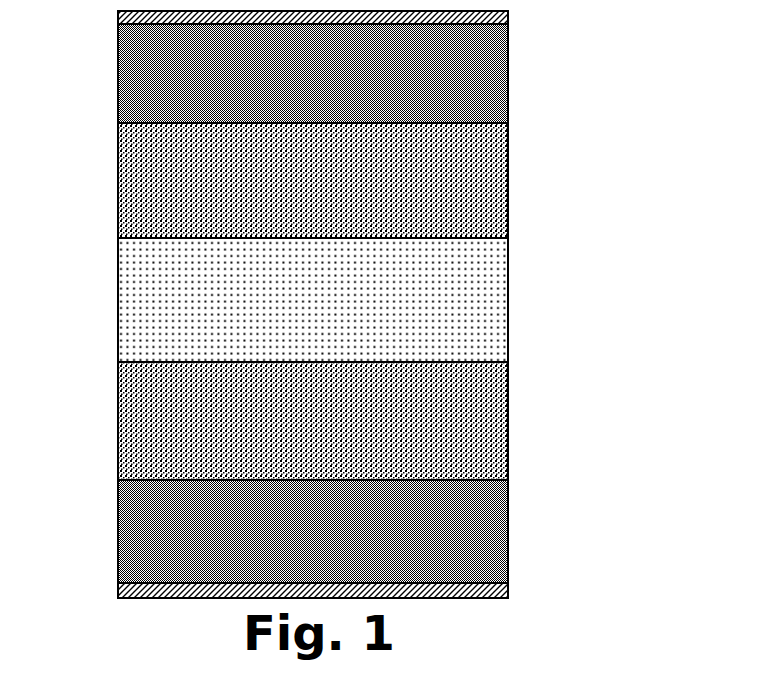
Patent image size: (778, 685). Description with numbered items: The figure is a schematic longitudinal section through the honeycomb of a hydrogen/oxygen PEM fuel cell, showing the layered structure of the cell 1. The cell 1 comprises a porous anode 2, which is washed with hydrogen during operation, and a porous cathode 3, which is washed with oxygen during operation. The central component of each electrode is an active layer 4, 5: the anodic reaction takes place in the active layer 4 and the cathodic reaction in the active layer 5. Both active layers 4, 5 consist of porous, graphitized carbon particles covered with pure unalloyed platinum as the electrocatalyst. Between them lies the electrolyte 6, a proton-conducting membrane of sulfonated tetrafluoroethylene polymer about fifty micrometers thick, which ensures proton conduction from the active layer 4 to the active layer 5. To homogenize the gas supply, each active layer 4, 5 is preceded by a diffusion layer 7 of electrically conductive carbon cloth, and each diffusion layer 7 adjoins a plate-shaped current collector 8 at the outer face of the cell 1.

The cell 1 is at (606, 342).
The porous anode 2 is at (90, 488).
The porous cathode 3 is at (84, 117).
The active layer 4 is at (468, 430).
The active layer 5 is at (487, 195).
The electrolyte 6 is at (470, 312).
The diffusion layer 7 is at (485, 75).
The current collector 8 is at (507, 22).